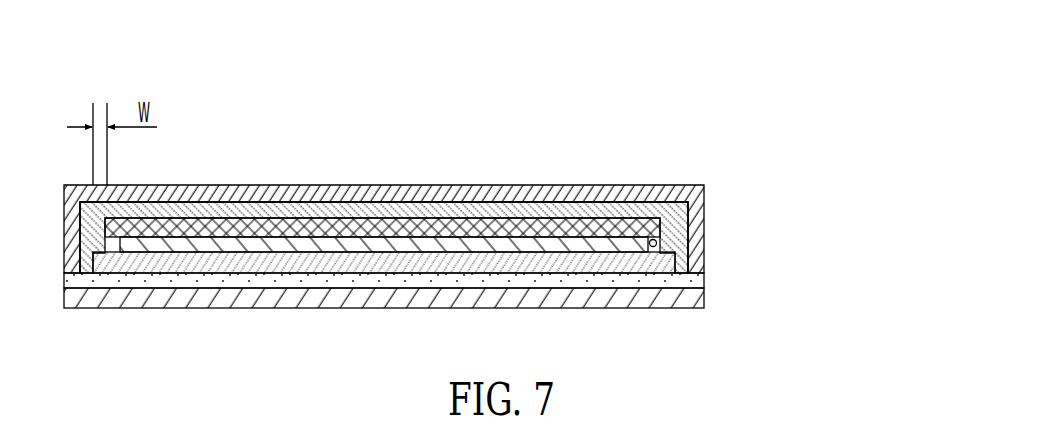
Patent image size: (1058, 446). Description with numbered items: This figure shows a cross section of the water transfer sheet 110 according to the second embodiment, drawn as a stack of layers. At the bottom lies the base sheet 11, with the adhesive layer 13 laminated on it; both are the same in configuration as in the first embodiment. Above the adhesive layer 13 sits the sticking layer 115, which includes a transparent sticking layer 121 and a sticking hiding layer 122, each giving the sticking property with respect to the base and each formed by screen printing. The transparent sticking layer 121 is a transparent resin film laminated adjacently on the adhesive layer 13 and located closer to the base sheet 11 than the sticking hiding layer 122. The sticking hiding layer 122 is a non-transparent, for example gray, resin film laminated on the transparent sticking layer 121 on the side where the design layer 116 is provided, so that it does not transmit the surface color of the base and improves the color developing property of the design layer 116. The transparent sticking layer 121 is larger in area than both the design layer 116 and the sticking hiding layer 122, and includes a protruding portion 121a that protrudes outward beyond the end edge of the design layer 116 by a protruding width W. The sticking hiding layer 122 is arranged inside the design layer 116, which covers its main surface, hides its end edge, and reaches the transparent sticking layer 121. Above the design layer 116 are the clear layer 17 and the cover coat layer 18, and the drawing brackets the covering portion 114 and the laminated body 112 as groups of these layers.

The water transfer sheet 110 is at (353, 119).
The laminated body 112 is at (867, 55).
The covering portion 114 is at (810, 105).
The sticking layer 115 is at (762, 182).
The cover coat layer 18 is at (605, 190).
The clear layer 17 is at (620, 190).
The design layer 116 is at (662, 186).
The sticking hiding layer 122 is at (706, 208).
The transparent sticking layer 121 is at (706, 243).
The protruding portion 121a is at (105, 273).
The adhesive layer 13 is at (705, 278).
The base sheet 11 is at (705, 297).